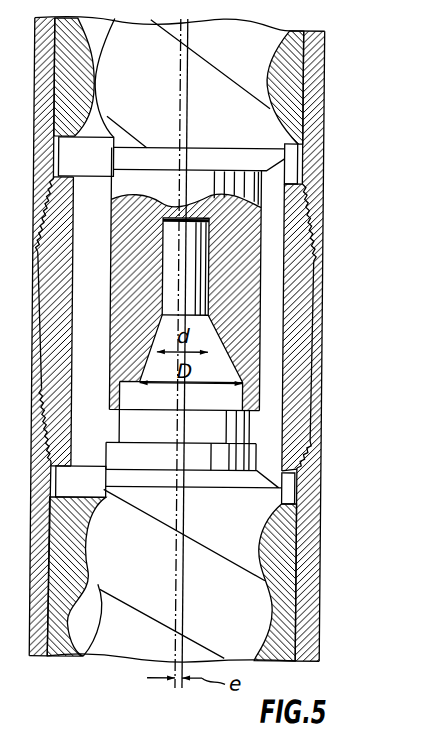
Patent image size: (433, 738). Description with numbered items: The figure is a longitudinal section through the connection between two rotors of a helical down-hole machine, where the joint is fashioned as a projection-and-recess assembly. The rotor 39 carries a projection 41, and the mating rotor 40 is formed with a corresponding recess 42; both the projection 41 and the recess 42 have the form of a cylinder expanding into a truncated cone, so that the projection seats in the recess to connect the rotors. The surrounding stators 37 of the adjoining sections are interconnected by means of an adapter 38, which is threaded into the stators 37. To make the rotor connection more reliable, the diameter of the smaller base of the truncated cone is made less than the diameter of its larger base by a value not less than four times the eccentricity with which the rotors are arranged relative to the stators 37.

The stator 37 is at (313, 170).
The adapter 38 is at (316, 287).
The rotor 39 is at (303, 107).
The rotor 40 is at (262, 522).
The projection 41 is at (112, 344).
The recess 42 is at (163, 206).